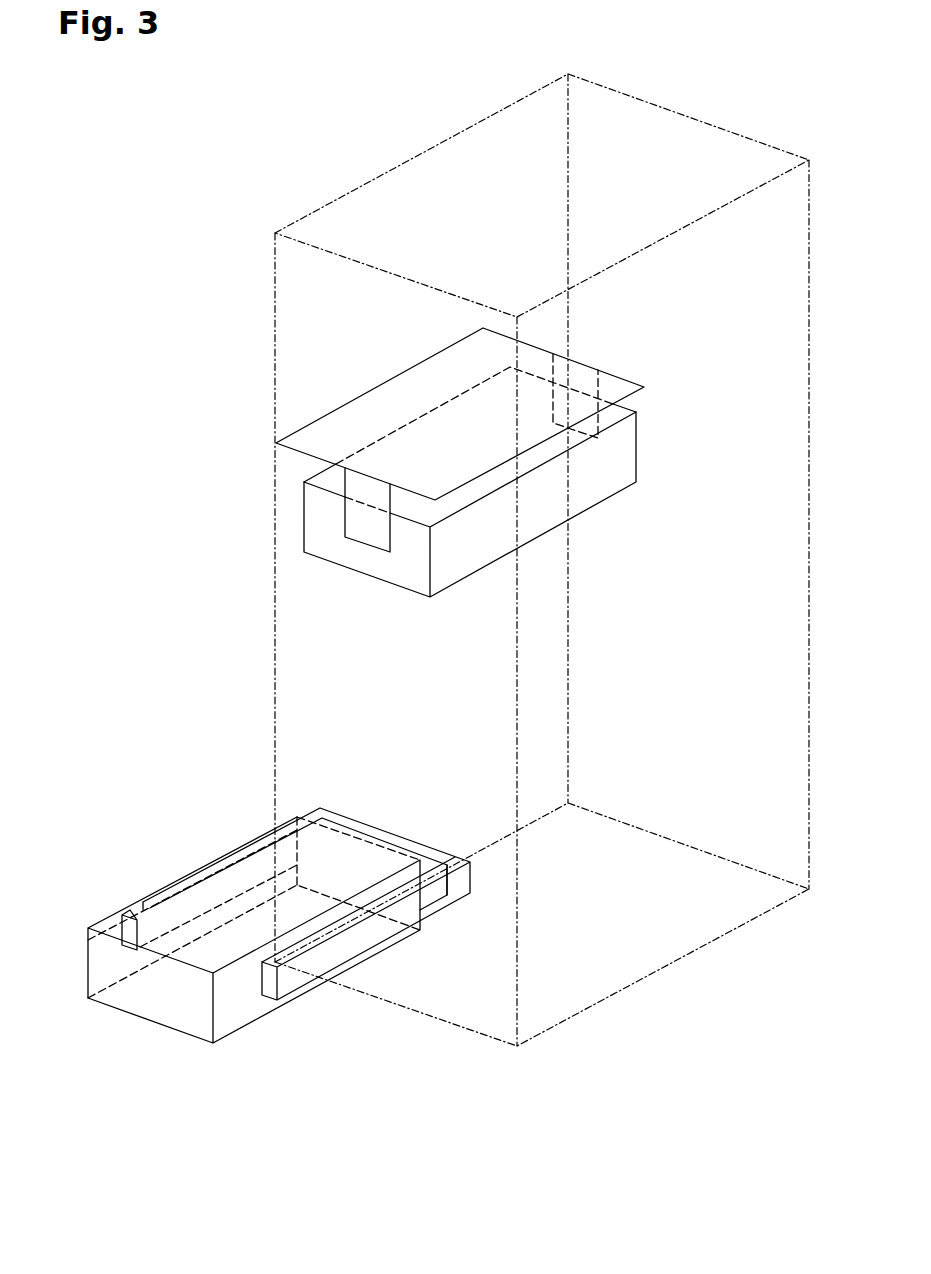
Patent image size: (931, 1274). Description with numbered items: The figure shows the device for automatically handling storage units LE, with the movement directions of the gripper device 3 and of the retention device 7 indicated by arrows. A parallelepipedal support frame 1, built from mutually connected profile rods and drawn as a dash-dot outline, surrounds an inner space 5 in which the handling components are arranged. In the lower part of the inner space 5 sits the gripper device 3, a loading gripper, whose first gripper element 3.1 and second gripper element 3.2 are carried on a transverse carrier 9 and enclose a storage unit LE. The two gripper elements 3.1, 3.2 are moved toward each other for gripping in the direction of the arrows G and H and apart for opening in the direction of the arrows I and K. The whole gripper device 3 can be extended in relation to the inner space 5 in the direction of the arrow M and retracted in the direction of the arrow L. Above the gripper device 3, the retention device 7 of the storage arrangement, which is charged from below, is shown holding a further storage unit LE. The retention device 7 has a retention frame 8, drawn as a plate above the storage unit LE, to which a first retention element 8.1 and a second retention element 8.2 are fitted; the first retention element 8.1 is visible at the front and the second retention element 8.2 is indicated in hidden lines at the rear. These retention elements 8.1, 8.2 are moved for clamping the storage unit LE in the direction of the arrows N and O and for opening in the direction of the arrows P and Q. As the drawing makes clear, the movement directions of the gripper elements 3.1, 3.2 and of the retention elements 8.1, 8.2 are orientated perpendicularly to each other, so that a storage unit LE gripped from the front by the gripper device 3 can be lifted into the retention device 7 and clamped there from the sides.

The support frame 1 is at (381, 208).
The gripper device 3 is at (120, 957).
The first gripper element 3.1 is at (150, 900).
The second gripper element 3.2 is at (460, 890).
The inner space 5 is at (300, 686).
The retention device 7 is at (308, 410).
The retention frame 8 is at (360, 392).
The first retention element 8.1 is at (355, 525).
The second retention element 8.2 is at (560, 362).
The transverse carrier 9 is at (345, 812).
The storage unit LE is at (612, 457).
The gripping direction arrow G is at (64, 984).
The gripping direction arrow H is at (322, 1080).
The opening direction arrow I is at (125, 1058).
The opening direction arrow K is at (198, 1083).
The retraction direction arrow L is at (429, 959).
The extension direction arrow M is at (430, 972).
The clamping direction arrow N is at (324, 587).
The clamping direction arrow O is at (588, 335).
The opening direction arrow P is at (330, 606).
The opening direction arrow Q is at (615, 340).